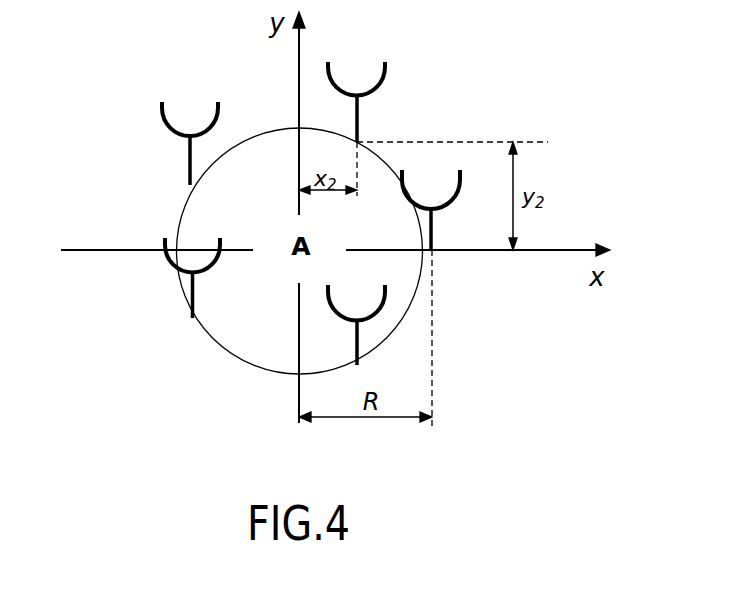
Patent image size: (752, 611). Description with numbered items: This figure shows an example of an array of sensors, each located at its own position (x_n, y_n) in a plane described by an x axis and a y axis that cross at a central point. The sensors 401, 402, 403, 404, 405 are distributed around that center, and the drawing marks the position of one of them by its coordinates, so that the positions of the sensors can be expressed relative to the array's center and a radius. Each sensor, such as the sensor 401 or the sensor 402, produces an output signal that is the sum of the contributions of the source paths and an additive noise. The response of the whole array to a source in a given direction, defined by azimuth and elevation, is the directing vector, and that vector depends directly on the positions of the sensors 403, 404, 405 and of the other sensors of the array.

The sensor 401 is at (170, 128).
The sensor 402 is at (360, 105).
The sensor 403 is at (434, 212).
The sensor 404 is at (385, 310).
The sensor 405 is at (192, 292).